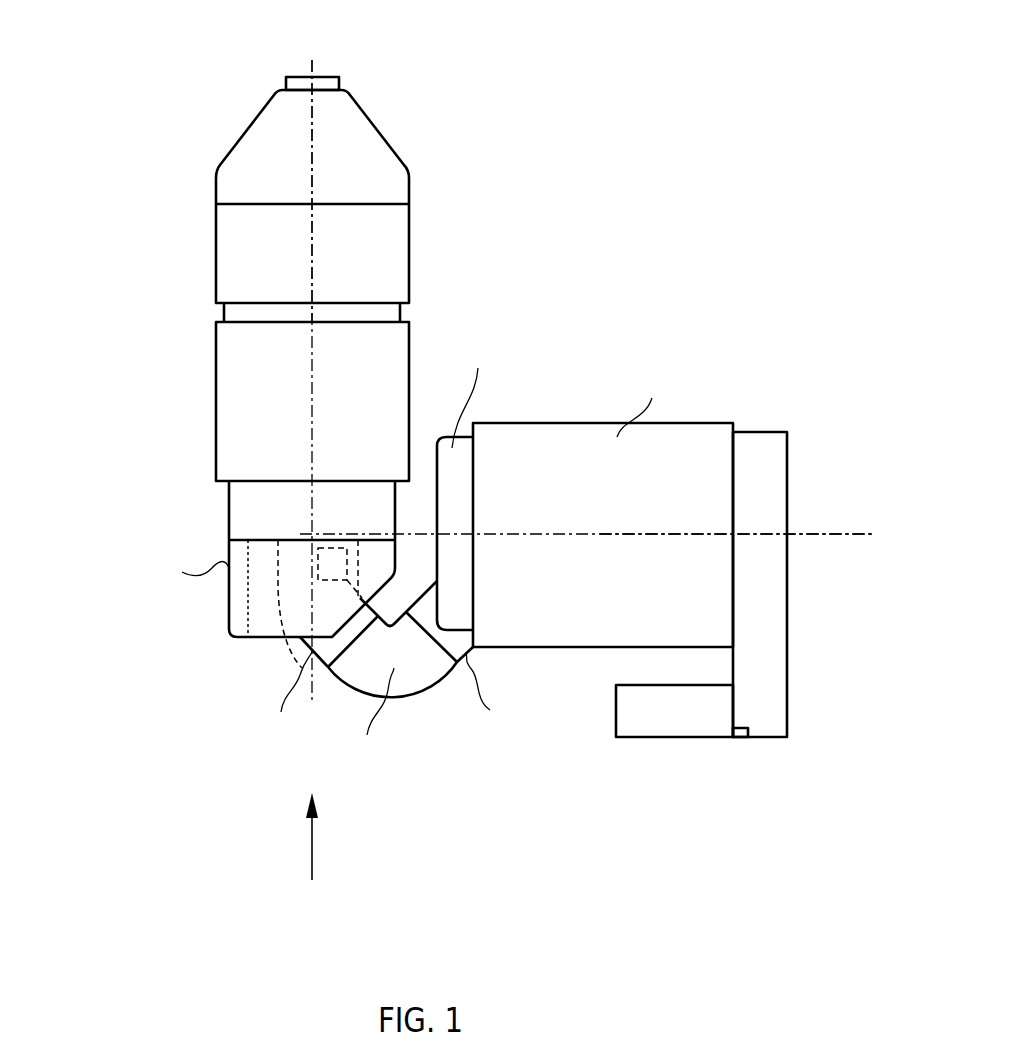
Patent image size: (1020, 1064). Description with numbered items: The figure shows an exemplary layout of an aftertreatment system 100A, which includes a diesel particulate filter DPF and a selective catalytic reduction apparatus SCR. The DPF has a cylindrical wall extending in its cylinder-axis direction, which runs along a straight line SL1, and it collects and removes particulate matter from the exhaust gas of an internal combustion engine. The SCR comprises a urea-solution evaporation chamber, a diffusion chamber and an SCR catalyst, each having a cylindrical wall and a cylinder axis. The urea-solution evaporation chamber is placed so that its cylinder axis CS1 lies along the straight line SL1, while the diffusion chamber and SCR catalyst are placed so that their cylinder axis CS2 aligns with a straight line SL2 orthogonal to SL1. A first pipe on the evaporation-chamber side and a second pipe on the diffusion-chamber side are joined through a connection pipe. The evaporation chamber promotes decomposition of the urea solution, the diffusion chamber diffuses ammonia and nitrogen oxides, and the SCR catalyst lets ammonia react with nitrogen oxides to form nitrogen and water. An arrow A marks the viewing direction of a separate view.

The aftertreatment system 100A is at (402, 112).
The diesel particulate filter DPF is at (245, 392).
The straight line SL1 is at (312, 143).
The cylinder axis CS1 is at (312, 228).
The selective catalytic reduction apparatus SCR is at (824, 82).
The cylinder axis CS2 is at (812, 528).
The straight line SL2 is at (855, 528).
The arrow A is at (313, 857).